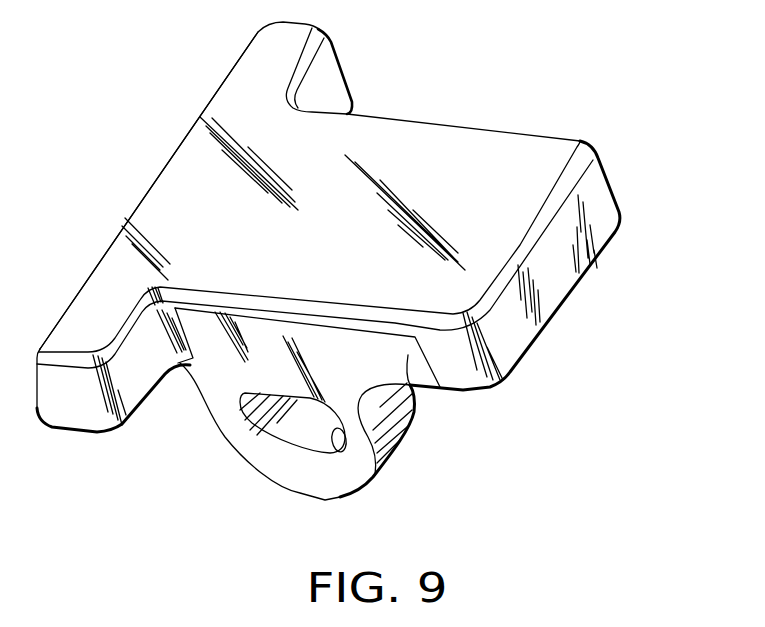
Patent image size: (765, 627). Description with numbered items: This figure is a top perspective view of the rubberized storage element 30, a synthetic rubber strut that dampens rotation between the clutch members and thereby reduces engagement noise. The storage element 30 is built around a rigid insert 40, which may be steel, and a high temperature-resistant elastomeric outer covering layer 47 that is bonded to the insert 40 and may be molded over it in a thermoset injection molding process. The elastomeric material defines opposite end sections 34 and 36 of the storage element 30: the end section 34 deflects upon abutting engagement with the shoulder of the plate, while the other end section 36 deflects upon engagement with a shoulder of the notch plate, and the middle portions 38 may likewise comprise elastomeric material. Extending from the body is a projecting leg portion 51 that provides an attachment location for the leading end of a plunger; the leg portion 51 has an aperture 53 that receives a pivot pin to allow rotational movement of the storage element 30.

The storage element 30 is at (354, 300).
The end section 34 is at (152, 183).
The end section 36 is at (520, 337).
The middle portion 38 is at (413, 147).
The rigid insert 40 is at (410, 385).
The outer covering layer 47 is at (576, 302).
The projecting leg portion 51 is at (334, 466).
The aperture 53 is at (340, 452).